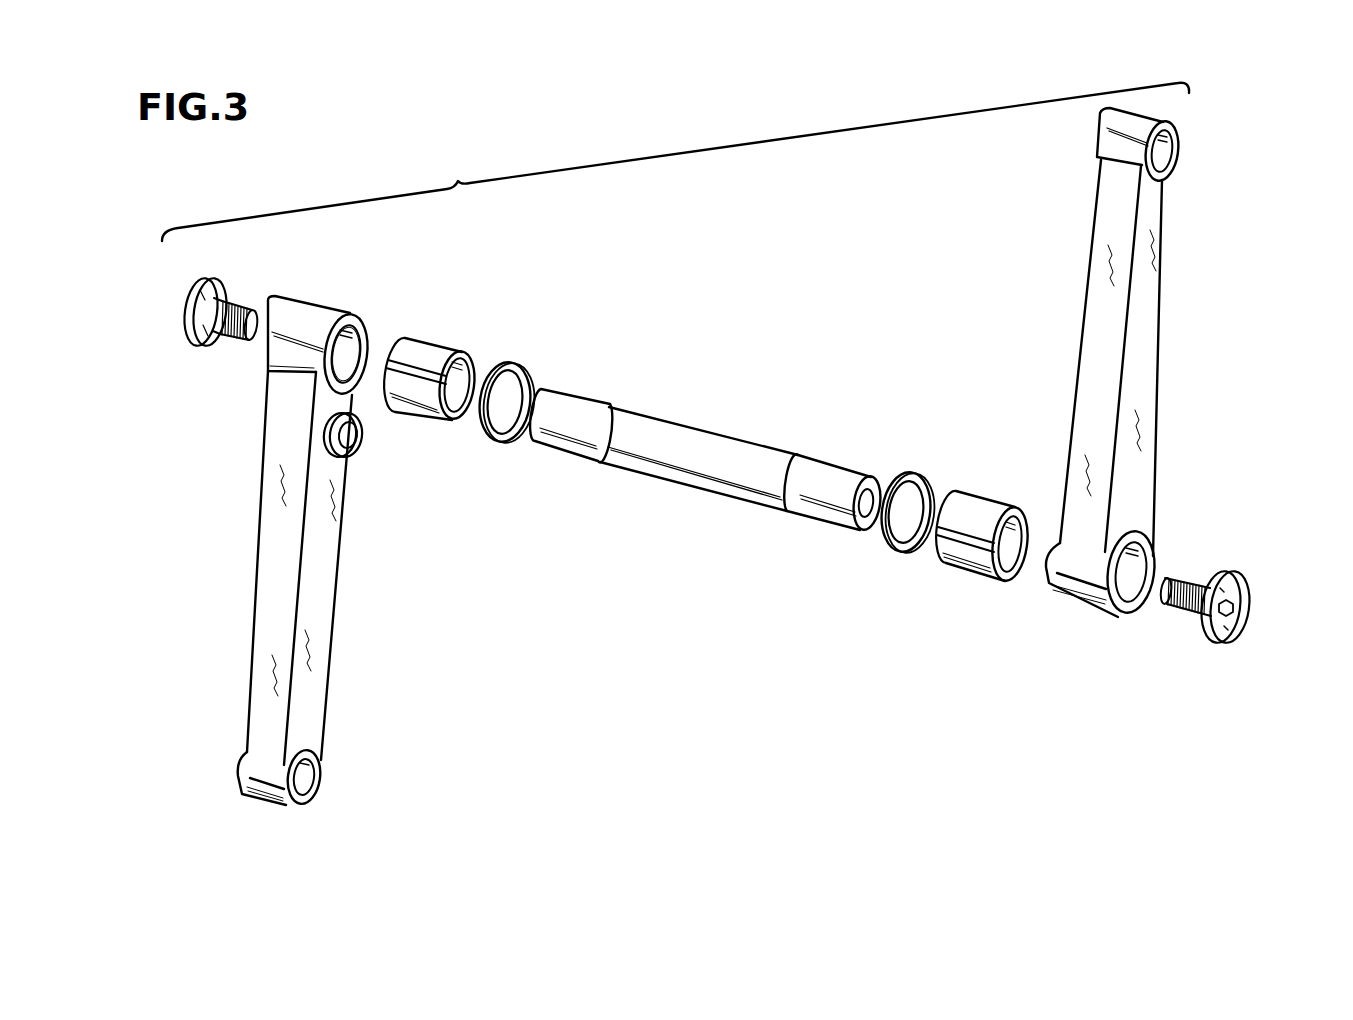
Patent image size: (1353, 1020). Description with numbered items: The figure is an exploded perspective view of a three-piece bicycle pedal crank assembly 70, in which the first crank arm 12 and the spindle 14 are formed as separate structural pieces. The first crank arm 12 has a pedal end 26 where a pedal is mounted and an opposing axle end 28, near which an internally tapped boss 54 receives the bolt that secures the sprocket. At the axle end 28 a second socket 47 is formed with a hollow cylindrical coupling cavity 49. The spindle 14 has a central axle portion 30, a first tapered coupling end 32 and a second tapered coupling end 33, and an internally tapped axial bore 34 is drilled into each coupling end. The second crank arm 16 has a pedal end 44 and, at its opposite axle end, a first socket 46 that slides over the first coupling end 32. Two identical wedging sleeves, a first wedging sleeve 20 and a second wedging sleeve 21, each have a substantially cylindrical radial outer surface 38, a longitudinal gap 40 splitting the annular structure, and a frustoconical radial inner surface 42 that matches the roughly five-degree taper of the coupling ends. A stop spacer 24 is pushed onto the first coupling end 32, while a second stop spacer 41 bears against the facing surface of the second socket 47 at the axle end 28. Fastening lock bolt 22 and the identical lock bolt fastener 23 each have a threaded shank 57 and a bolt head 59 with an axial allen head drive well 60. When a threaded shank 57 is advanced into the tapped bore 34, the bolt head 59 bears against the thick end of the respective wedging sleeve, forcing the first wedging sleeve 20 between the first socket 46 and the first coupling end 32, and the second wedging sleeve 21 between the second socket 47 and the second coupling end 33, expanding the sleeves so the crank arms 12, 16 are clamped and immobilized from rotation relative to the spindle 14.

The first crank arm 12 is at (341, 543).
The spindle 14 is at (718, 414).
The second crank arm 16 is at (1070, 297).
The first wedging sleeve 20 is at (1004, 490).
The second wedging sleeve 21 is at (463, 333).
The fastening lock bolt 22 is at (1188, 560).
The lock bolt fastener 23 is at (175, 298).
The stop spacer 24 is at (906, 466).
The pedal end 26 is at (300, 740).
The axle end 28 is at (292, 373).
The axle portion 30 is at (678, 475).
The first coupling end 32 is at (825, 470).
The second coupling end 33 is at (568, 400).
The internally tapped axial bore 34 is at (868, 515).
The radial outer surface 38 is at (413, 407).
The longitudinal gap 40 is at (386, 354).
The second stop spacer 41 is at (492, 440).
The radial inner surface 42 is at (464, 373).
The pedal end 44 is at (1117, 167).
The first socket 46 is at (1075, 603).
The second socket 47 is at (308, 315).
The hollow cylindrical coupling cavity 49 is at (370, 342).
The internally tapped boss 54 is at (356, 450).
The threaded shank 57 is at (236, 303).
The bolt head 59 is at (210, 350).
The axial allen head drive well 60 is at (1235, 608).
The bicycle pedal crank assembly 70 is at (448, 172).